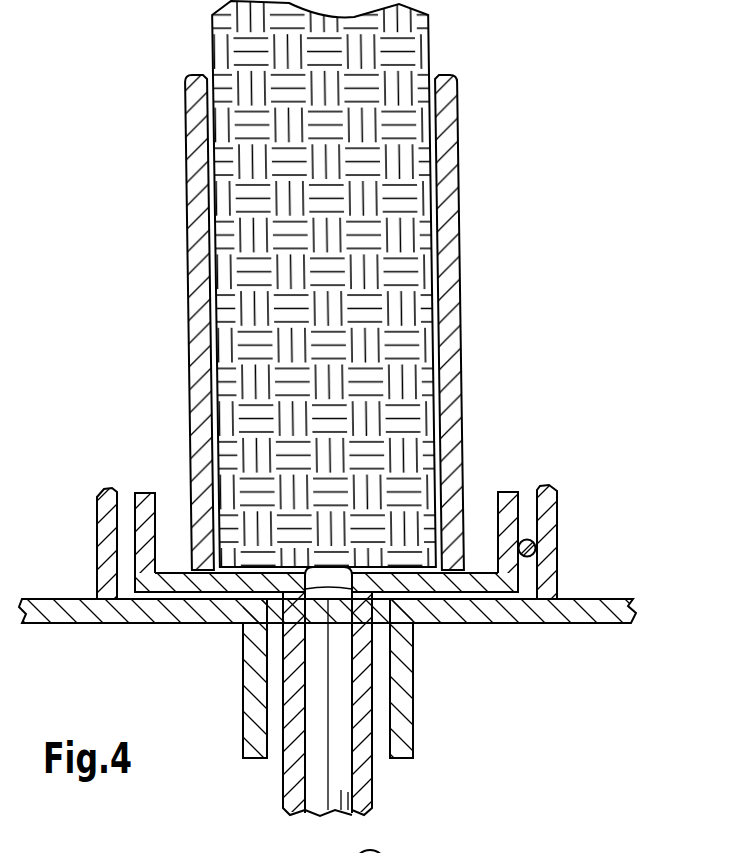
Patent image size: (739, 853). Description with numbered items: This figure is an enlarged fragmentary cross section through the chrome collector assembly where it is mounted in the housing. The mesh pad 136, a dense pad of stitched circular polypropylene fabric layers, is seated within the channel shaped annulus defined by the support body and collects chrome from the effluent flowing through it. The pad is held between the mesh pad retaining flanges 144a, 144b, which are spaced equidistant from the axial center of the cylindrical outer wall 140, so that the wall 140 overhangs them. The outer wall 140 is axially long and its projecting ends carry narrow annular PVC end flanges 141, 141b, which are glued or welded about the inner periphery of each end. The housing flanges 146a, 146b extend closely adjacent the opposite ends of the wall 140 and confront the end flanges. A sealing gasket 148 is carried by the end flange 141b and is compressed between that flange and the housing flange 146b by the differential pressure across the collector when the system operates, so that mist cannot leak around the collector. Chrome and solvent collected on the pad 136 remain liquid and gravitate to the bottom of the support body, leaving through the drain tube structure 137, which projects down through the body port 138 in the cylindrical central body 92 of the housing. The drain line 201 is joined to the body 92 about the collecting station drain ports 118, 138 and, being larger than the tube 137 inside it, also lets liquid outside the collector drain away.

The mesh pad 136 is at (352, 63).
The mesh pad retaining flange 144a is at (192, 355).
The mesh pad retaining flange 144b is at (452, 332).
The end flange 141 is at (150, 500).
The end flange 141b is at (508, 492).
The cylindrical outer wall 140 is at (470, 583).
The housing flange 146a is at (103, 540).
The housing flange 146b is at (550, 500).
The sealing gasket 148 is at (530, 545).
The cylindrical central body 92 is at (100, 620).
The drain tube structure 137 is at (434, 676).
The drain line 201 is at (416, 748).
The body port 138 is at (278, 616).
The drain port 118 is at (367, 791).